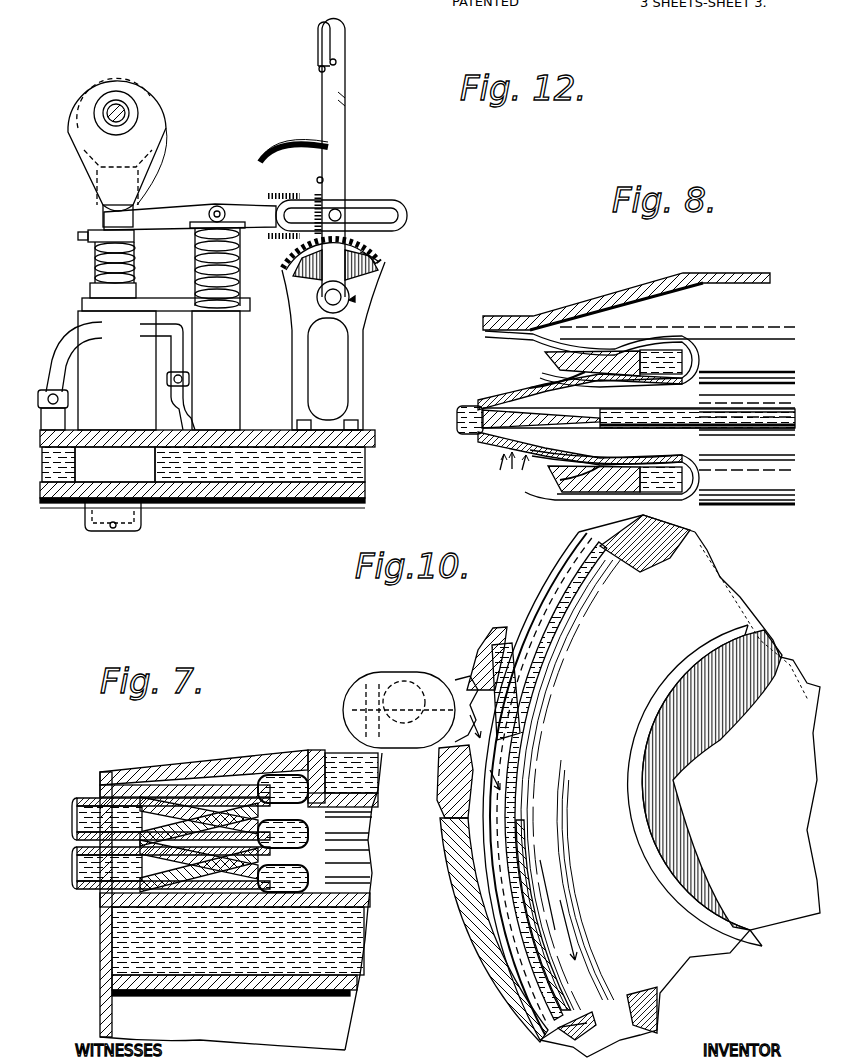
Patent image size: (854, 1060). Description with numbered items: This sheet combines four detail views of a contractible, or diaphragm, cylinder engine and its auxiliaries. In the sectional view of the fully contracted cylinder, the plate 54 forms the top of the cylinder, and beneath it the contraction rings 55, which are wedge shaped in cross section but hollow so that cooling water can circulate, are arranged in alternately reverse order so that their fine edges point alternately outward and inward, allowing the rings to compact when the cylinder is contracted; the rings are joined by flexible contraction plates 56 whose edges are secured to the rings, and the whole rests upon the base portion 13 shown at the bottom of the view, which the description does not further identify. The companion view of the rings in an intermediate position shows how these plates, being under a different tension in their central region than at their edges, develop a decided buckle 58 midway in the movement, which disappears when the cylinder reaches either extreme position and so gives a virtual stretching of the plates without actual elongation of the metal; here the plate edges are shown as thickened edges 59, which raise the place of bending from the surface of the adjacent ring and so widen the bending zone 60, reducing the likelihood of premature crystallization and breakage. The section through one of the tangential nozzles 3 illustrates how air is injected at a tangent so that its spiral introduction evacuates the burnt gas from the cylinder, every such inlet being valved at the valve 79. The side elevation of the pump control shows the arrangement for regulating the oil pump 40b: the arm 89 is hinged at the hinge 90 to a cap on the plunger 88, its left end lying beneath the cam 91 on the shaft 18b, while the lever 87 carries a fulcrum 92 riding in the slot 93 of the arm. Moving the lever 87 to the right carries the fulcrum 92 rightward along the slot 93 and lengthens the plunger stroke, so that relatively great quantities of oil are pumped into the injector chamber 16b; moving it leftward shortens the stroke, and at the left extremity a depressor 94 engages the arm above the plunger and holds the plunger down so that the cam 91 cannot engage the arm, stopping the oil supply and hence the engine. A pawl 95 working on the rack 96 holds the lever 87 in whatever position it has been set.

In FIG. 12, the shaft 18b is at (128, 108).
In FIG. 12, the cam 91 is at (140, 186).
In FIG. 12, the arm 89 is at (178, 212).
In FIG. 12, the hinge 90 is at (223, 209).
In FIG. 12, the fulcrum 92 is at (342, 208).
In FIG. 12, the slot 93 is at (396, 218).
In FIG. 12, the lever 87 is at (338, 154).
In FIG. 12, the depressor 94 is at (272, 146).
In FIG. 12, the pawl 95 is at (304, 240).
In FIG. 12, the rack 96 is at (383, 258).
In FIG. 12, the plunger 88 is at (197, 258).
In FIG. 12, the injector chamber 16b is at (95, 402).
In FIG. 12, the oil pump 40b is at (232, 365).
In FIG. 8, the thickened edges 59 is at (681, 340).
In FIG. 8, the buckle 58 is at (584, 376).
In FIG. 8, the bending zone 60 is at (514, 471).
In FIG. 10, the valve 79 is at (400, 693).
In FIG. 10, the nozzle 3 is at (464, 815).
In FIG. 7, the plate 54 is at (222, 770).
In FIG. 7, the contraction rings 55 is at (80, 818).
In FIG. 7, the flexible contraction plates 56 is at (160, 786).
In FIG. 7, the body 13 is at (336, 908).